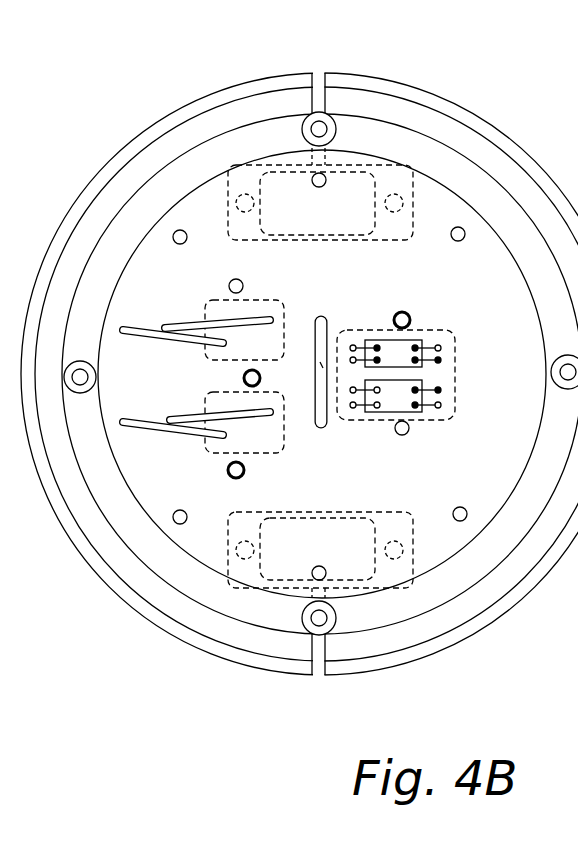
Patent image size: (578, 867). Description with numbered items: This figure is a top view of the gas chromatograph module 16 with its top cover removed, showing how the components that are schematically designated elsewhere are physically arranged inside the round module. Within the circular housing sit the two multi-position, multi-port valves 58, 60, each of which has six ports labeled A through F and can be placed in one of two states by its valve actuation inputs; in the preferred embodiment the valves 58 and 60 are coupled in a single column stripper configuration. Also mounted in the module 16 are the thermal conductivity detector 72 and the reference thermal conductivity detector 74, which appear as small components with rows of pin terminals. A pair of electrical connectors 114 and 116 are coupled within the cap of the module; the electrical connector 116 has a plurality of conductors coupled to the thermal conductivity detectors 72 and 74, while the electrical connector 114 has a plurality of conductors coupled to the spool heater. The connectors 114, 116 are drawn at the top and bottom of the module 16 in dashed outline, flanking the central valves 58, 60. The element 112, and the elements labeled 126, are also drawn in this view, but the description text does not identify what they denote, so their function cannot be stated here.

The gas chromatograph module 16 is at (282, 63).
The electrical connector 116 is at (362, 185).
The electrical connector 114 is at (357, 567).
The mounting ring 112 is at (218, 598).
The multi-position, multi-port valve 58 is at (272, 300).
The multi-position, multi-port valve 60 is at (276, 448).
The conductors 126 is at (200, 322).
The thermal conductivity detector 72 is at (403, 352).
The reference thermal conductivity detector 74 is at (390, 400).